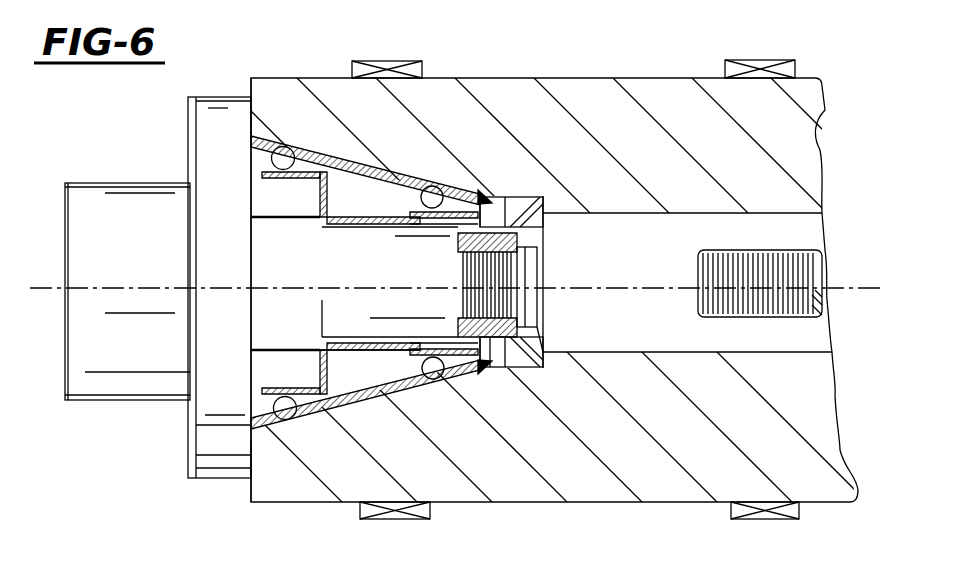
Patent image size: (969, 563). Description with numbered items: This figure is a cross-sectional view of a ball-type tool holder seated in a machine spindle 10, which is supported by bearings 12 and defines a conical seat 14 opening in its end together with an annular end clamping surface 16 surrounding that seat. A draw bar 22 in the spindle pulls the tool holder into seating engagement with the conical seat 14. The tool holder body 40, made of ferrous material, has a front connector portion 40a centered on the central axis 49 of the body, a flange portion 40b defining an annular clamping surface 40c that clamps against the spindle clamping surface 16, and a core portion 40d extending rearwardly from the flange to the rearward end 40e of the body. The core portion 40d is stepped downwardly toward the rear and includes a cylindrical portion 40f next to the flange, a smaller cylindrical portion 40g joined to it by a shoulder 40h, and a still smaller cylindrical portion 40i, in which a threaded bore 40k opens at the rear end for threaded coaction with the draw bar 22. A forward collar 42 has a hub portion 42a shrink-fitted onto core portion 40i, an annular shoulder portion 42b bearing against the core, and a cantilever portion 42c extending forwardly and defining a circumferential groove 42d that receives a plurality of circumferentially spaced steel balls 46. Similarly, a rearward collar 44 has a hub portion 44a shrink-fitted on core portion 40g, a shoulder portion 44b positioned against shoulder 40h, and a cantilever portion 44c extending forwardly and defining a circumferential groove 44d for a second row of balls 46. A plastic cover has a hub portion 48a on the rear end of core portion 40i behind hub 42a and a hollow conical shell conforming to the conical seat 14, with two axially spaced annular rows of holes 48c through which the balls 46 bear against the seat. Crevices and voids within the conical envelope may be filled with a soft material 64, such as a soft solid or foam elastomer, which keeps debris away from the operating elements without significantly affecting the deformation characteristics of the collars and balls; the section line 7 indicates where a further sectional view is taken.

The spindle 10 is at (597, 67).
The bearings 12 is at (402, 61).
The conical seat 14 is at (420, 185).
The annular end clamping surface 16 is at (248, 112).
The draw bar 22 is at (742, 250).
The tool holder body 40 is at (175, 454).
The front connector portion 40a is at (97, 183).
The flange portion 40b is at (193, 428).
The annular clamping surface 40c is at (258, 462).
The core portion 40d is at (372, 347).
The rearward end 40e is at (543, 235).
The cylindrical portion 40f is at (302, 276).
The cylindrical portion 40g is at (405, 283).
The shoulder 40h is at (325, 315).
The cylindrical portion 40i is at (552, 338).
The threaded bore 40k is at (500, 280).
The forward collar 42 is at (487, 195).
The hub portion 42a is at (515, 197).
The annular shoulder portion 42b is at (500, 357).
The cantilever portion 42c is at (483, 362).
The circumferential groove 42d is at (714, 551).
The rearward collar 44 is at (338, 190).
The hub portion 44a is at (393, 185).
The shoulder portion 44b is at (345, 372).
The cantilever portion 44c is at (318, 185).
The circumferential groove 44d is at (262, 175).
The balls 46 is at (283, 147).
The hub portion 48a is at (538, 210).
The holes 48c is at (443, 380).
The central axis 49 is at (135, 288).
The soft material 64 is at (673, 562).
The section line 7 is at (438, 398).